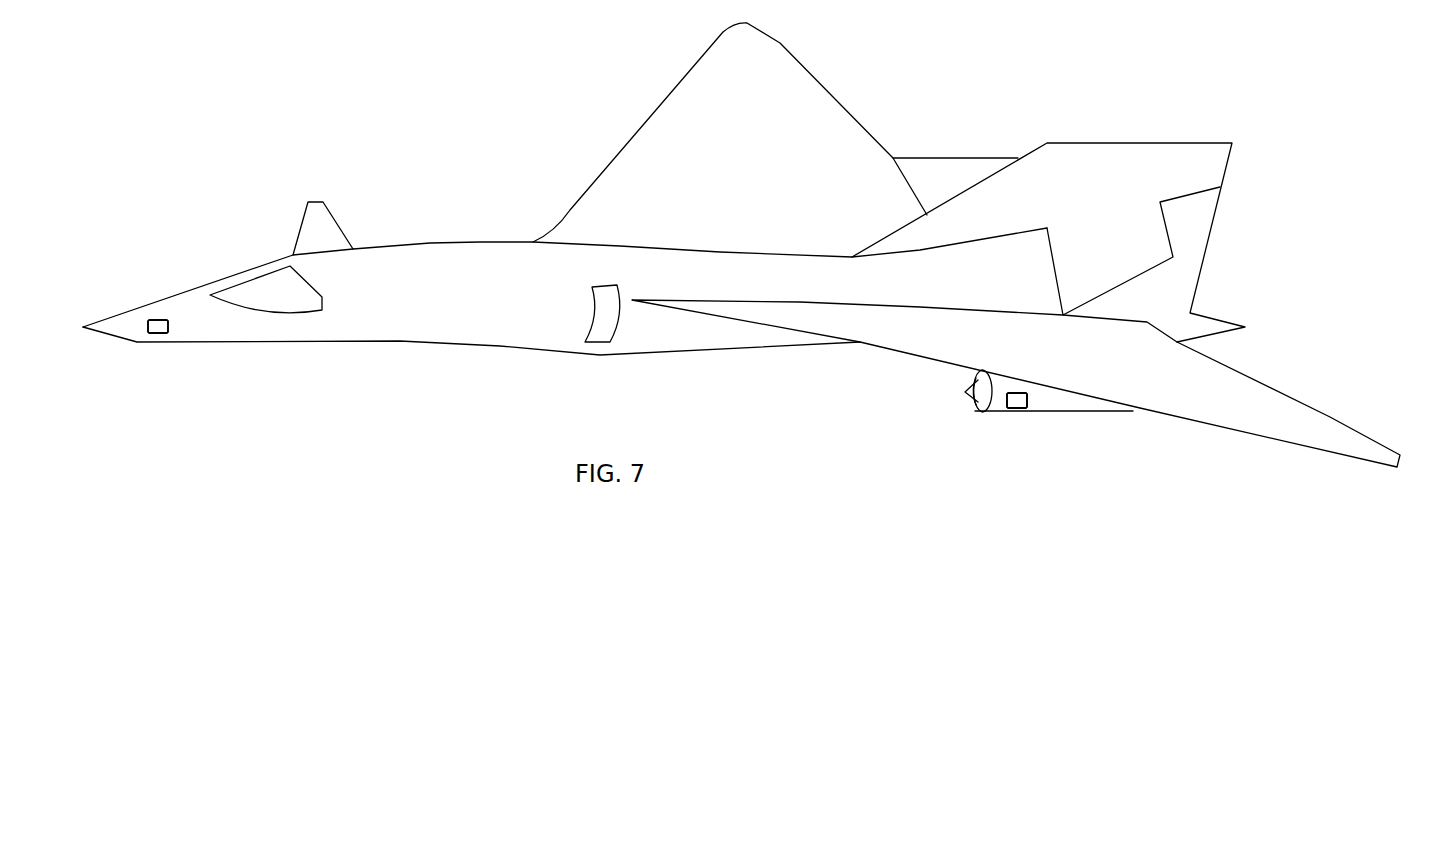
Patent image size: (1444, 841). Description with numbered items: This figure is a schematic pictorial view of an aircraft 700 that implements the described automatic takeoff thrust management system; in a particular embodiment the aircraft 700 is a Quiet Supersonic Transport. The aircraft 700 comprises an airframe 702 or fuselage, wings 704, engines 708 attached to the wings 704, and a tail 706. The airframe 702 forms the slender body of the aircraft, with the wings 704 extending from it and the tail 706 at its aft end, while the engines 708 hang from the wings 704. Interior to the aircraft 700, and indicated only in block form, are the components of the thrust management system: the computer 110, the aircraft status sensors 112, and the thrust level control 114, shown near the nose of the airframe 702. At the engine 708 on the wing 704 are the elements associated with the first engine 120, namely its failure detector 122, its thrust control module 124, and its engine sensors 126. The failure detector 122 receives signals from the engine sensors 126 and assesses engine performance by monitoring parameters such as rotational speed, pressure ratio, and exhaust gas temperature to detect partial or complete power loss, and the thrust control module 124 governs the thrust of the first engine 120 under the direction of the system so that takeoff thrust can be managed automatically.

The aircraft 700 is at (322, 108).
The airframe 702 is at (697, 353).
The wings 704 is at (587, 200).
The tail 706 is at (1180, 142).
The engines 708 is at (977, 412).
The computer 110 is at (158, 330).
The sensors 112 is at (158, 326).
The thrust level control 114 is at (158, 326).
The first engine 120 is at (1018, 402).
The failure detector 122 is at (1017, 400).
The thrust control module 124 is at (1017, 400).
The engine sensors 126 is at (1017, 400).